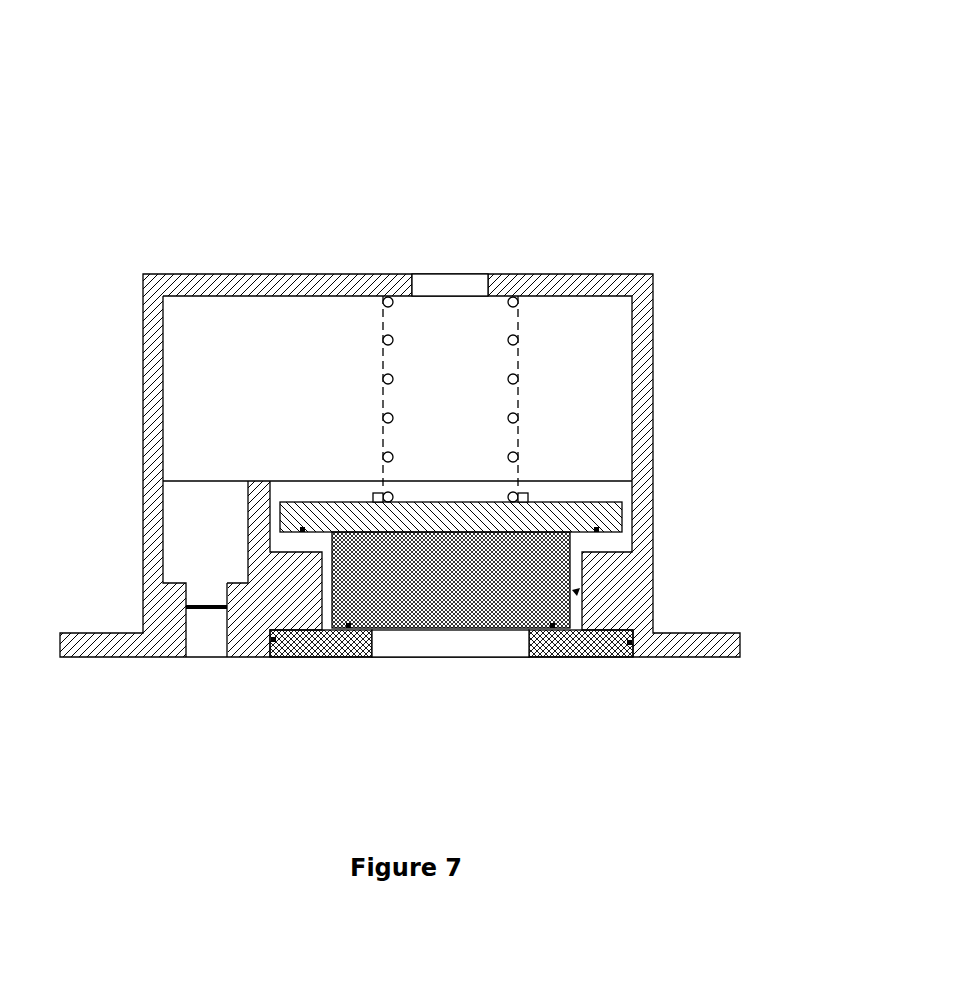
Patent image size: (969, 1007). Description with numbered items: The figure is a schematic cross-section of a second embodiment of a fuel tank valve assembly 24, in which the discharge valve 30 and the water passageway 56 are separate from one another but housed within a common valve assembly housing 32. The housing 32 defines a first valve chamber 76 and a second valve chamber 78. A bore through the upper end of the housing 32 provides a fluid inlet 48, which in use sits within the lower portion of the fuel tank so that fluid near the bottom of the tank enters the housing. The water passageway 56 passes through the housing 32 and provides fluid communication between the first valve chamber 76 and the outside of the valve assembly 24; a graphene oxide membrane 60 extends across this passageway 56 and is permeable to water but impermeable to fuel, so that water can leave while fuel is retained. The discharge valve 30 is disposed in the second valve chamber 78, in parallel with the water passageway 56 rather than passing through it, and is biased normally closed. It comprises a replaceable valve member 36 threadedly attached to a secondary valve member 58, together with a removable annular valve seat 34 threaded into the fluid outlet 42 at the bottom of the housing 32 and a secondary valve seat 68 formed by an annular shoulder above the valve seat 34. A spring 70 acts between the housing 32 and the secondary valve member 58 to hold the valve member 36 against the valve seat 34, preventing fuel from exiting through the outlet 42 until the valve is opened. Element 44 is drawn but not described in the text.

The fuel tank valve assembly 24 is at (496, 103).
The discharge valve 30 is at (580, 592).
The valve assembly housing 32 is at (645, 355).
The valve seat 34 is at (575, 643).
The valve member 36 is at (456, 610).
The fluid outlet 42 is at (410, 648).
The seal 44 is at (636, 650).
The fluid inlet 48 is at (438, 287).
The water passageway 56 is at (199, 634).
The secondary valve member 58 is at (600, 513).
The graphene oxide membrane 60 is at (197, 614).
The secondary valve seat 68 is at (608, 568).
The spring 70 is at (518, 334).
The first valve chamber 76 is at (198, 498).
The second valve chamber 78 is at (616, 440).